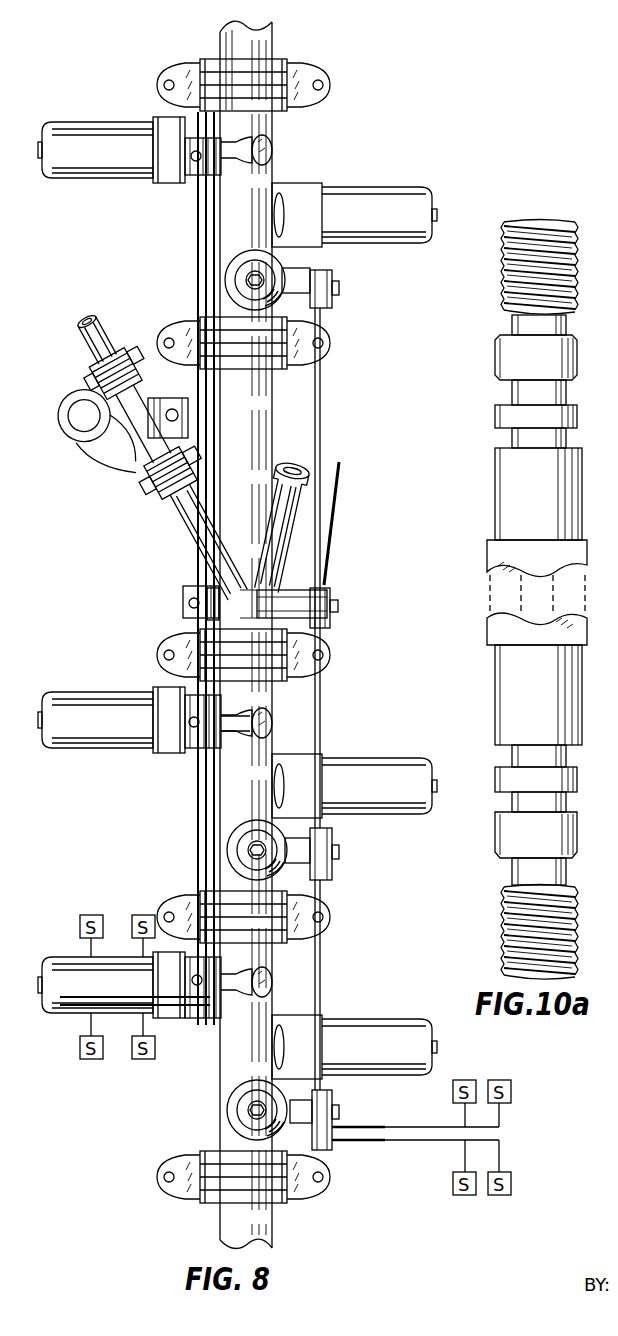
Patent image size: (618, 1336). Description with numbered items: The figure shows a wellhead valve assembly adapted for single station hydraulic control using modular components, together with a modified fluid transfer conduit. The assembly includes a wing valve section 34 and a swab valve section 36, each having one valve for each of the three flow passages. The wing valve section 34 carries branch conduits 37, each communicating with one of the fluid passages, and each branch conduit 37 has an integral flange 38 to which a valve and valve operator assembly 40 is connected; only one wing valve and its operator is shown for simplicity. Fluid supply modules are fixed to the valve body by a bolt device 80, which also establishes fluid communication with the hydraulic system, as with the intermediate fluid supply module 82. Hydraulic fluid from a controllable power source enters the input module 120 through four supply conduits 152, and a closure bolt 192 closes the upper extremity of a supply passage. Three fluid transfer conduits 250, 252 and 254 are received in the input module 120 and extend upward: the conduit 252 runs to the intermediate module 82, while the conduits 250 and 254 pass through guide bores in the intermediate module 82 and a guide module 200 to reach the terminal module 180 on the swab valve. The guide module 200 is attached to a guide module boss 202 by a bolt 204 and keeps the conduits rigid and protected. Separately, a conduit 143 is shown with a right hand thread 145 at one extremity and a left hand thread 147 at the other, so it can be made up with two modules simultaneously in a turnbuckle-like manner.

In FIG. 8, the wing valve section 34 is at (250, 430).
In FIG. 8, the swab valve section 36 is at (268, 181).
In FIG. 8, the branch conduit 37 is at (190, 488).
In FIG. 8, the integral flange 38 is at (300, 462).
In FIG. 8, the valve and valve operator assembly 40 is at (115, 450).
In FIG. 8, the bolt device 80 is at (192, 727).
In FIG. 8, the intermediate fluid supply module 82 is at (200, 702).
In FIG. 8, the input module 120 is at (205, 1020).
In FIG. 8, the supply conduit 152 is at (188, 999).
In FIG. 8, the terminal module 180 is at (186, 166).
In FIG. 8, the closure bolt 192 is at (319, 311).
In FIG. 8, the guide module 200 is at (186, 607).
In FIG. 8, the guide module boss 202 is at (290, 598).
In FIG. 8, the bolt 204 is at (340, 606).
In FIG. 8, the fluid transfer conduit 250 is at (200, 546).
In FIG. 8, the fluid transfer conduit 252 is at (207, 811).
In FIG. 8, the fluid transfer conduit 254 is at (213, 257).
In FIG. 10a, the conduit 143 is at (488, 548).
In FIG. 10a, the right hand thread 145 is at (504, 281).
In FIG. 10a, the left hand thread 147 is at (507, 945).